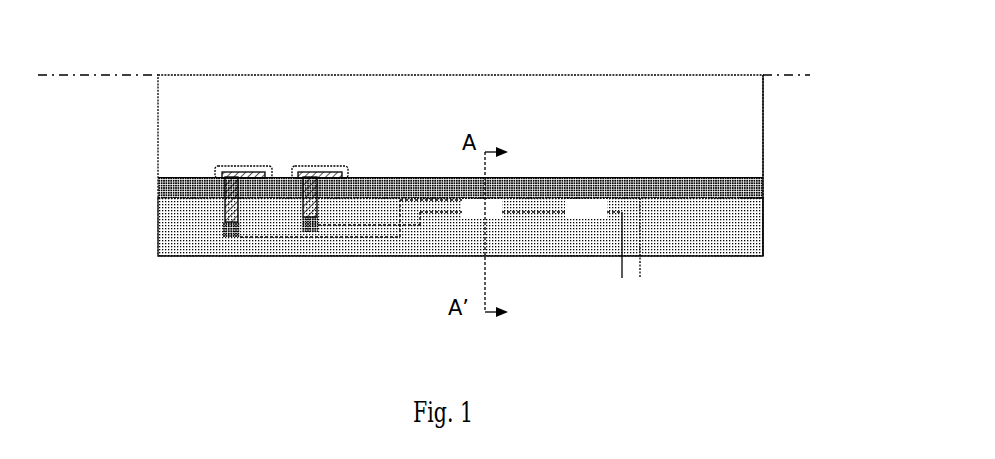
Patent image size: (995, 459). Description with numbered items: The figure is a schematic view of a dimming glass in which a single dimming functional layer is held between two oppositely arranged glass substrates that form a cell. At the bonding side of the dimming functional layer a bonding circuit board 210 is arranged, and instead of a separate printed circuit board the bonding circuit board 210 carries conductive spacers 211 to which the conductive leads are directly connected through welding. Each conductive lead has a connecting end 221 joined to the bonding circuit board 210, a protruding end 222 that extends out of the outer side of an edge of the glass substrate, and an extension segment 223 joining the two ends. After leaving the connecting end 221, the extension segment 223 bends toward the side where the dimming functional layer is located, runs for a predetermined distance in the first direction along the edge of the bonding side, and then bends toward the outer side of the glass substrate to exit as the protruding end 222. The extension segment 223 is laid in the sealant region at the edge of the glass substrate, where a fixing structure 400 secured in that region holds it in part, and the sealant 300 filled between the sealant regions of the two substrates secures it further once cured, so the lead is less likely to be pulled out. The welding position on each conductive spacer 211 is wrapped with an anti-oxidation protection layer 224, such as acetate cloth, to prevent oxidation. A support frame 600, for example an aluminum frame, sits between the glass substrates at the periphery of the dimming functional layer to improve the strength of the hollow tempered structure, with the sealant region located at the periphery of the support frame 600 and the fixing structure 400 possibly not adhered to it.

The bonding circuit board 210 is at (159, 192).
The conductive spacer 211 is at (224, 214).
The connecting end 221 is at (242, 238).
The protruding end 222 is at (640, 265).
The extension segment 223 is at (423, 178).
The anti-oxidation protection layer 224 is at (313, 237).
The sealant 300 is at (740, 233).
The fixing structure 400 is at (588, 212).
The support frame 600 is at (763, 188).